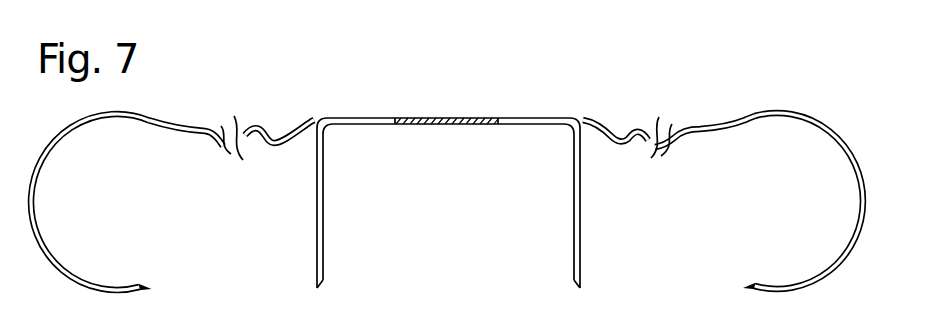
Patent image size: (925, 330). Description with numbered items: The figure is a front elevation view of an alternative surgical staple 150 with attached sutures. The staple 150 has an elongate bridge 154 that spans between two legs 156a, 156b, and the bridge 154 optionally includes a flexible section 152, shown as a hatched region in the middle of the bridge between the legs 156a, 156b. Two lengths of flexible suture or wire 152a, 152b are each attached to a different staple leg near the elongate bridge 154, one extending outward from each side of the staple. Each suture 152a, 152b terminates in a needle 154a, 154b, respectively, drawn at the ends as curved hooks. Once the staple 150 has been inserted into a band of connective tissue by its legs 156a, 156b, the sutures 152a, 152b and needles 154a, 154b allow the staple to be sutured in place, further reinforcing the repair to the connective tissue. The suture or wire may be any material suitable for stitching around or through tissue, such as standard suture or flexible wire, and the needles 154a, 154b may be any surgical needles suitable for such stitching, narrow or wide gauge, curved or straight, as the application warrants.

The surgical staple 150 is at (331, 88).
The flexible section 152 is at (443, 117).
The suture or wire 152a is at (228, 149).
The suture or wire 152b is at (703, 131).
The elongate bridge 154 is at (532, 117).
The needle 154a is at (131, 221).
The needle 154b is at (859, 203).
The staple leg 156a is at (416, 271).
The staple leg 156b is at (573, 258).